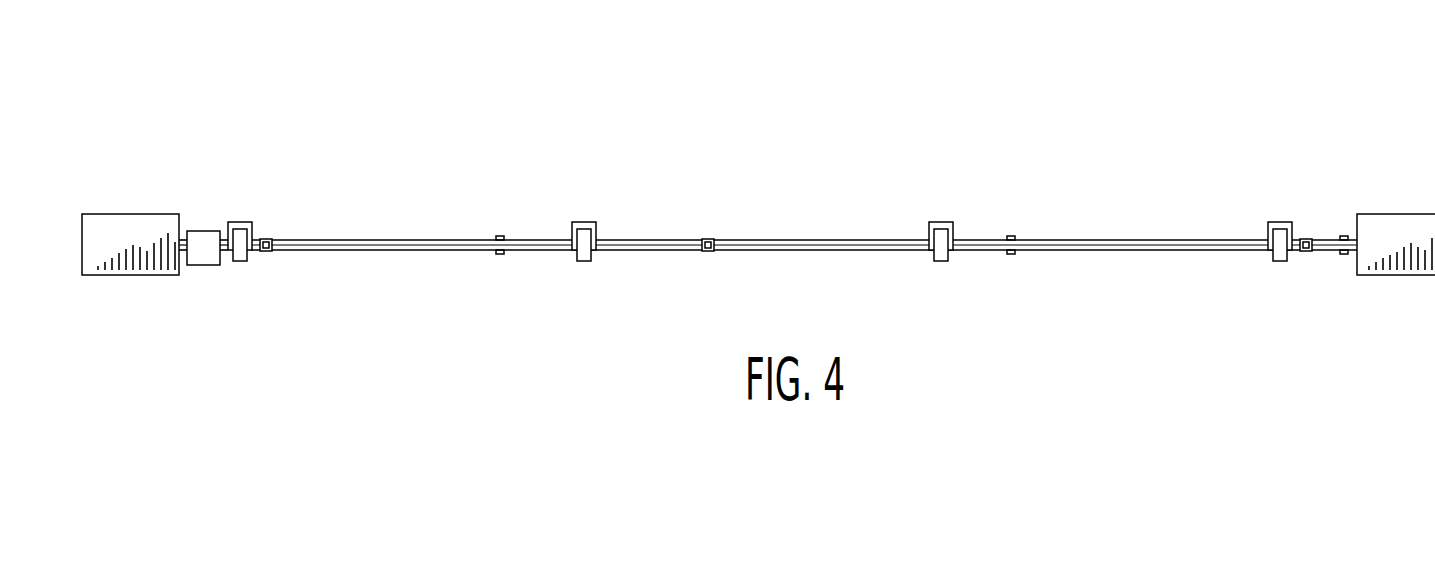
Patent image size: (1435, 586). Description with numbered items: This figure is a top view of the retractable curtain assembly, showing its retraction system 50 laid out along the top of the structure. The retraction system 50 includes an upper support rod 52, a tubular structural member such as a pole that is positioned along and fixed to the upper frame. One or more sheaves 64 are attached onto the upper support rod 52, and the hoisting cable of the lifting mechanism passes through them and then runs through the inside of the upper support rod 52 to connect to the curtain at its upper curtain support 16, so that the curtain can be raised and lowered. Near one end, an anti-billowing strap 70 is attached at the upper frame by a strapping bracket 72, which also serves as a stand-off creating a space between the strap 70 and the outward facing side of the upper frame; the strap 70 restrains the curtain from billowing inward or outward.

The retraction system 50 is at (986, 151).
The upper support rod 52 is at (370, 239).
The sheave 64 is at (500, 236).
The upper curtain support 16 is at (813, 239).
The anti-billowing strap 70 is at (237, 264).
The strapping bracket 72 is at (237, 220).